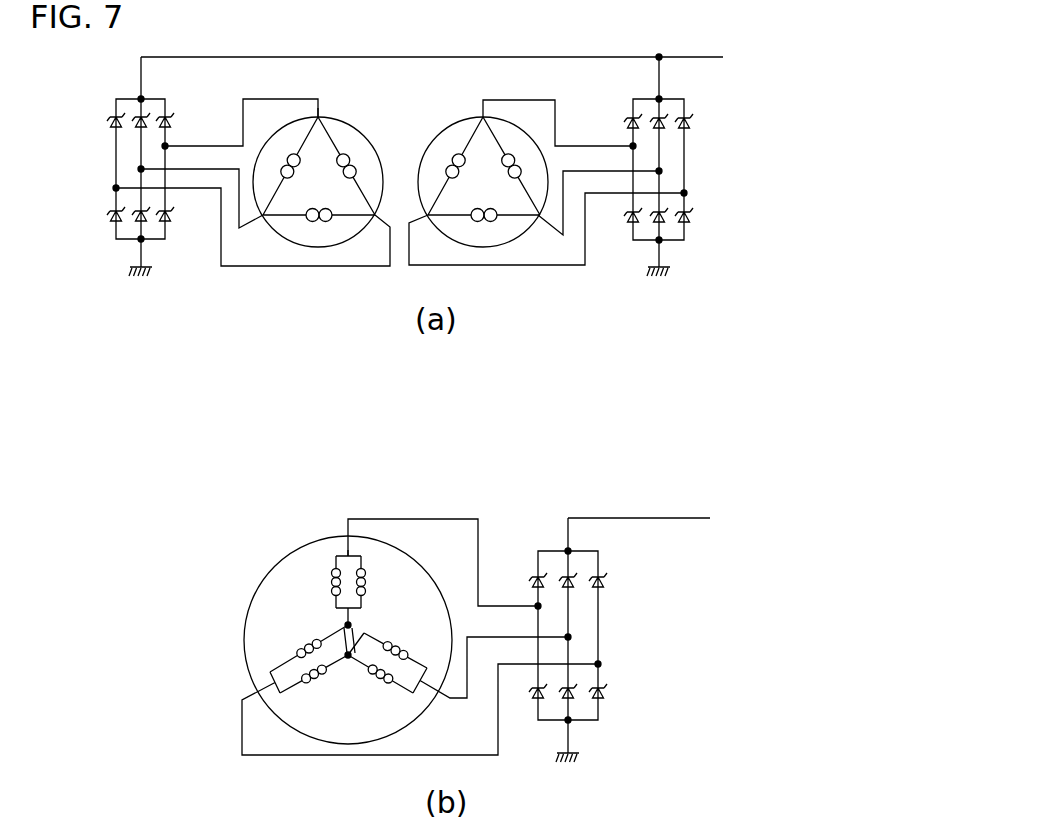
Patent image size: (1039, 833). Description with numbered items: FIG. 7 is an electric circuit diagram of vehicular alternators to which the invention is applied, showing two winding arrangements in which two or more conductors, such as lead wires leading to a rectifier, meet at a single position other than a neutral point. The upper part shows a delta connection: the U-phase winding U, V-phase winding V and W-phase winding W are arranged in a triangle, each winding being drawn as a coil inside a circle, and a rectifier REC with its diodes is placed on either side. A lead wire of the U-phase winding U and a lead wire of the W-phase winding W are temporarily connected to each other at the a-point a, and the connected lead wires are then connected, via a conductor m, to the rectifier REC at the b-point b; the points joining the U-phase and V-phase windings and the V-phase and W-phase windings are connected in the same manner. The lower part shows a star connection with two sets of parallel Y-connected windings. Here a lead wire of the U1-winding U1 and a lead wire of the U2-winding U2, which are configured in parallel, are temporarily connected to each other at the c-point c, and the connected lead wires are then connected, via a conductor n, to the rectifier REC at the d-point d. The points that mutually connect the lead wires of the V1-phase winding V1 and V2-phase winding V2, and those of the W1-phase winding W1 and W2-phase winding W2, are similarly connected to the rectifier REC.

The rectifier REC is at (137, 161).
The conductor m is at (268, 99).
The a-point a is at (322, 115).
The b-point b is at (168, 145).
The c-point c is at (348, 553).
The d-point d is at (538, 606).
The conductor n is at (430, 519).
The U-phase winding U is at (293, 150).
The V-phase winding V is at (312, 223).
The W-phase winding W is at (360, 167).
The U1-winding U1 is at (331, 574).
The U2-winding U2 is at (392, 567).
The V1-phase winding V1 is at (311, 684).
The V2-phase winding V2 is at (305, 639).
The W1-phase winding W1 is at (391, 637).
The W2-phase winding W2 is at (378, 689).